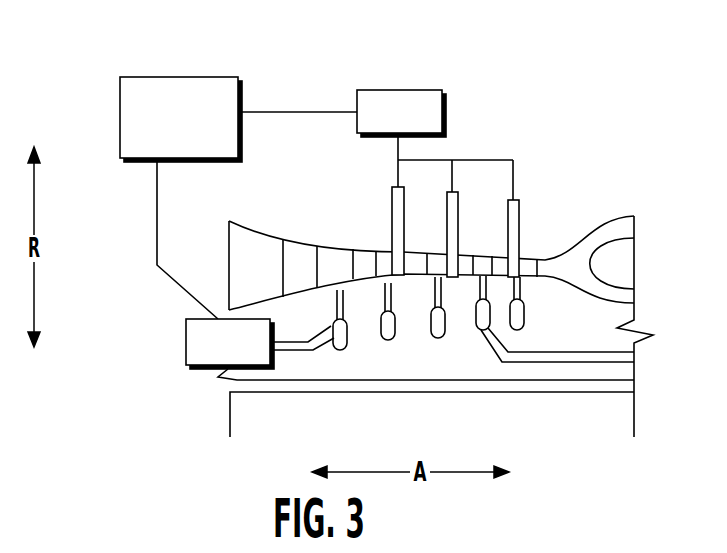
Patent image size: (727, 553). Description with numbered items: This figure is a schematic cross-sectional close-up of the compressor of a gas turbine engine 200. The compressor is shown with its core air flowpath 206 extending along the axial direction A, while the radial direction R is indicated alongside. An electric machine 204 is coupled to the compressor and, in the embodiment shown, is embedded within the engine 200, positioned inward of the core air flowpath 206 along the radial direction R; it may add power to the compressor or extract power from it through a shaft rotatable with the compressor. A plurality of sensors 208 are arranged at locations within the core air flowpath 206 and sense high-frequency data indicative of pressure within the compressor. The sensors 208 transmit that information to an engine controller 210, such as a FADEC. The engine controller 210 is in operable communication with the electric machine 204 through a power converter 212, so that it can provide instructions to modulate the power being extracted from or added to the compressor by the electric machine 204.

The gas turbine engine 200 is at (605, 114).
The electric machine 204 is at (213, 356).
The core air flowpath 206 is at (339, 246).
The sensors 208 is at (392, 207).
The engine controller 210 is at (410, 90).
The power converter 212 is at (185, 77).